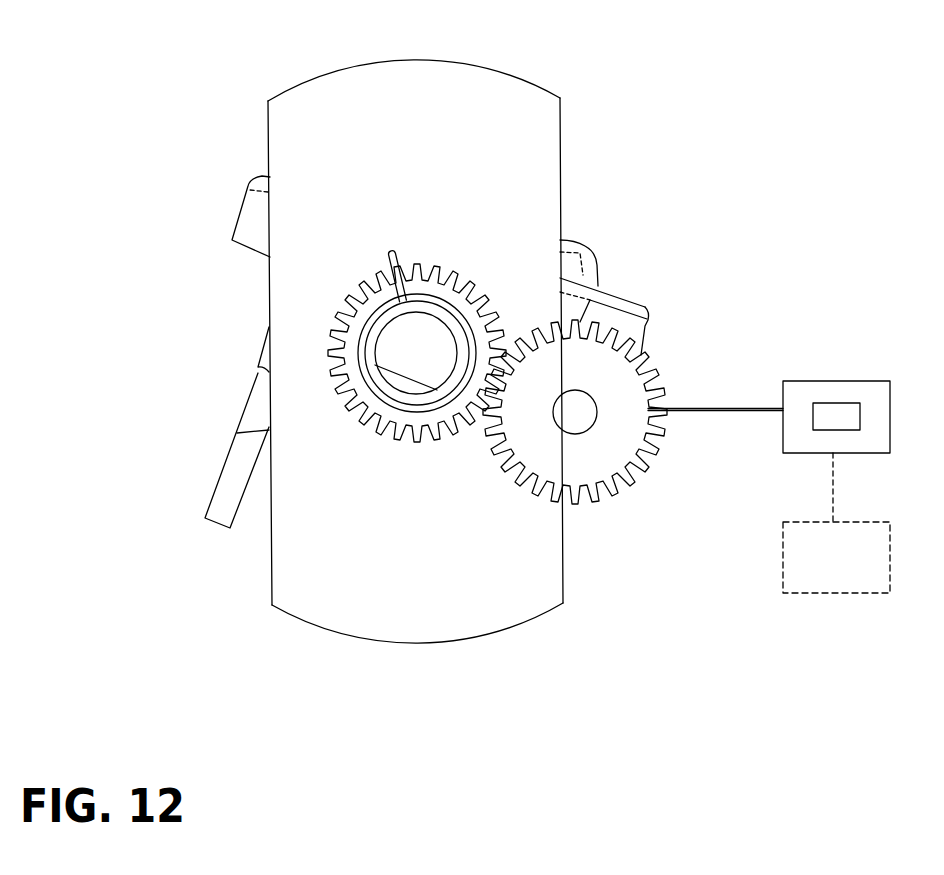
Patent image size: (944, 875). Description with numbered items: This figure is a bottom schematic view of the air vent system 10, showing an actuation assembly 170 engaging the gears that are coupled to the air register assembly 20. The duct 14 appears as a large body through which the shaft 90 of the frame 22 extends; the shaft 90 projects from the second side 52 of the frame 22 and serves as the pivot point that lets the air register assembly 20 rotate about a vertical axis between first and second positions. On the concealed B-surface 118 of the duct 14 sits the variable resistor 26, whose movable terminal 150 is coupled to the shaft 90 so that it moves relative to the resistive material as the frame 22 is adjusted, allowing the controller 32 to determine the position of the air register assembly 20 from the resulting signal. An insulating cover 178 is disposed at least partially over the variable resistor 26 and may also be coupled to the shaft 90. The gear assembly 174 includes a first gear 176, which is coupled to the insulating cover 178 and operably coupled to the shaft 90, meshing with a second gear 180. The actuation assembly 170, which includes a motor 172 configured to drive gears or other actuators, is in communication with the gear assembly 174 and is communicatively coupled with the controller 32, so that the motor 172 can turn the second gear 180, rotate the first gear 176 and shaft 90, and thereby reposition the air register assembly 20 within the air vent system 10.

The air vent system 10 is at (666, 82).
The duct 14 is at (477, 590).
The air register assembly 20 is at (602, 178).
The frame 22 is at (652, 303).
The variable resistor 26 is at (337, 265).
The controller 32 is at (783, 562).
The second side 52 is at (623, 327).
The shaft 90 is at (407, 340).
The B-surface 118 is at (392, 594).
The movable terminal 150 is at (388, 252).
The actuation assembly 170 is at (831, 381).
The motor 172 is at (822, 432).
The gear assembly 174 is at (448, 462).
The first gear 176 is at (398, 443).
The insulating cover 178 is at (373, 390).
The second gear 180 is at (611, 488).